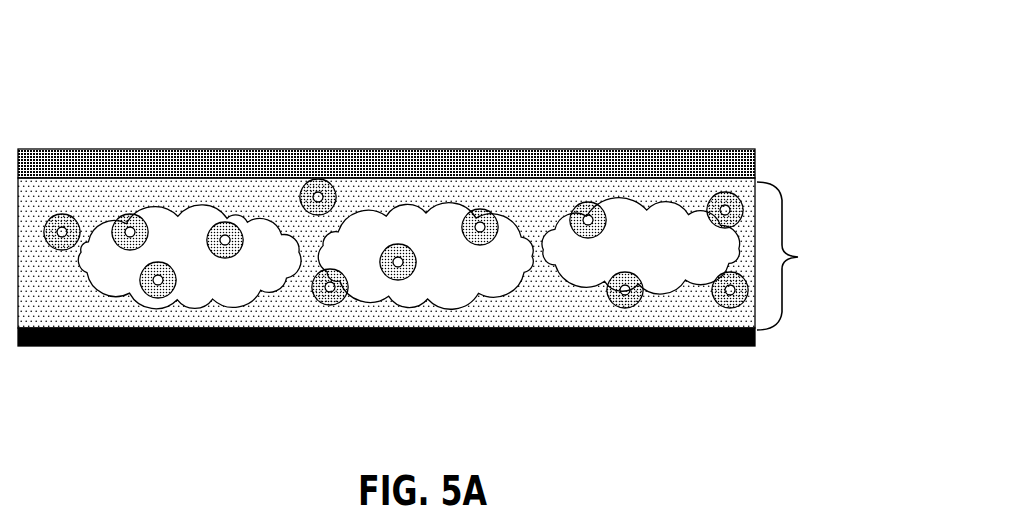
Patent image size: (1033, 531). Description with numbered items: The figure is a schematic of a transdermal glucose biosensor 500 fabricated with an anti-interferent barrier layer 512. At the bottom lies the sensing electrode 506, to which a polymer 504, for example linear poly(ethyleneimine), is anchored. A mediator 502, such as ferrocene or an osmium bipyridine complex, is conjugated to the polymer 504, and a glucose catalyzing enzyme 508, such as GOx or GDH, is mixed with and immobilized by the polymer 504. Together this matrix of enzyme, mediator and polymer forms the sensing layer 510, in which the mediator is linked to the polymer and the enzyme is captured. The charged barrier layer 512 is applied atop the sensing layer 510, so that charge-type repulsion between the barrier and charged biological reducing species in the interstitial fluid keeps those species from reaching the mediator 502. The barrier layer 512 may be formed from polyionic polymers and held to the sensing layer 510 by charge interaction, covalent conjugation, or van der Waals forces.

The sensing layer structure 500 is at (650, 64).
The mediator 502 is at (307, 190).
The polymer 504 is at (367, 315).
The sensing electrode 506 is at (175, 344).
The glucose catalyzing enzyme 508 is at (468, 288).
The sensing layer 510 is at (799, 256).
The barrier layer 512 is at (495, 163).